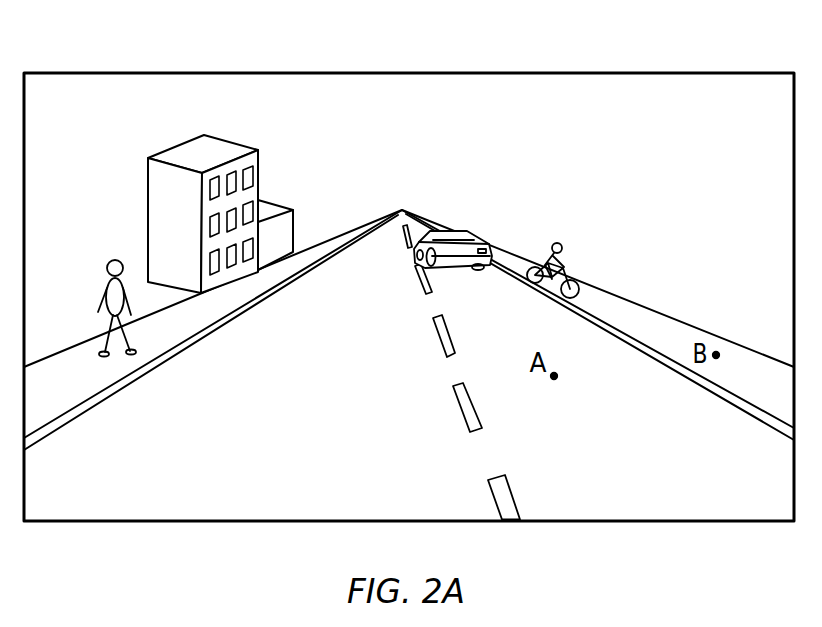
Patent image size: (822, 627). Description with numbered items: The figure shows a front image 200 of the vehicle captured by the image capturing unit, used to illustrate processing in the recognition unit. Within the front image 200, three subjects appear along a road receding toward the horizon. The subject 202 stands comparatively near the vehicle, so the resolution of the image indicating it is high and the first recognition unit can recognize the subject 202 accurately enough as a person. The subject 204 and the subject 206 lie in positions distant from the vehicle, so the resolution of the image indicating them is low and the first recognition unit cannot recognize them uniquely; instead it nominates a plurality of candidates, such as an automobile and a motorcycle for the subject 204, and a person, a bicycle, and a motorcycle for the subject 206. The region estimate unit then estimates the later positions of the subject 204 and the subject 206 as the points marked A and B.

The front image 200 is at (667, 72).
The subject 202 is at (113, 260).
The subject 204 is at (465, 233).
The subject 206 is at (567, 263).